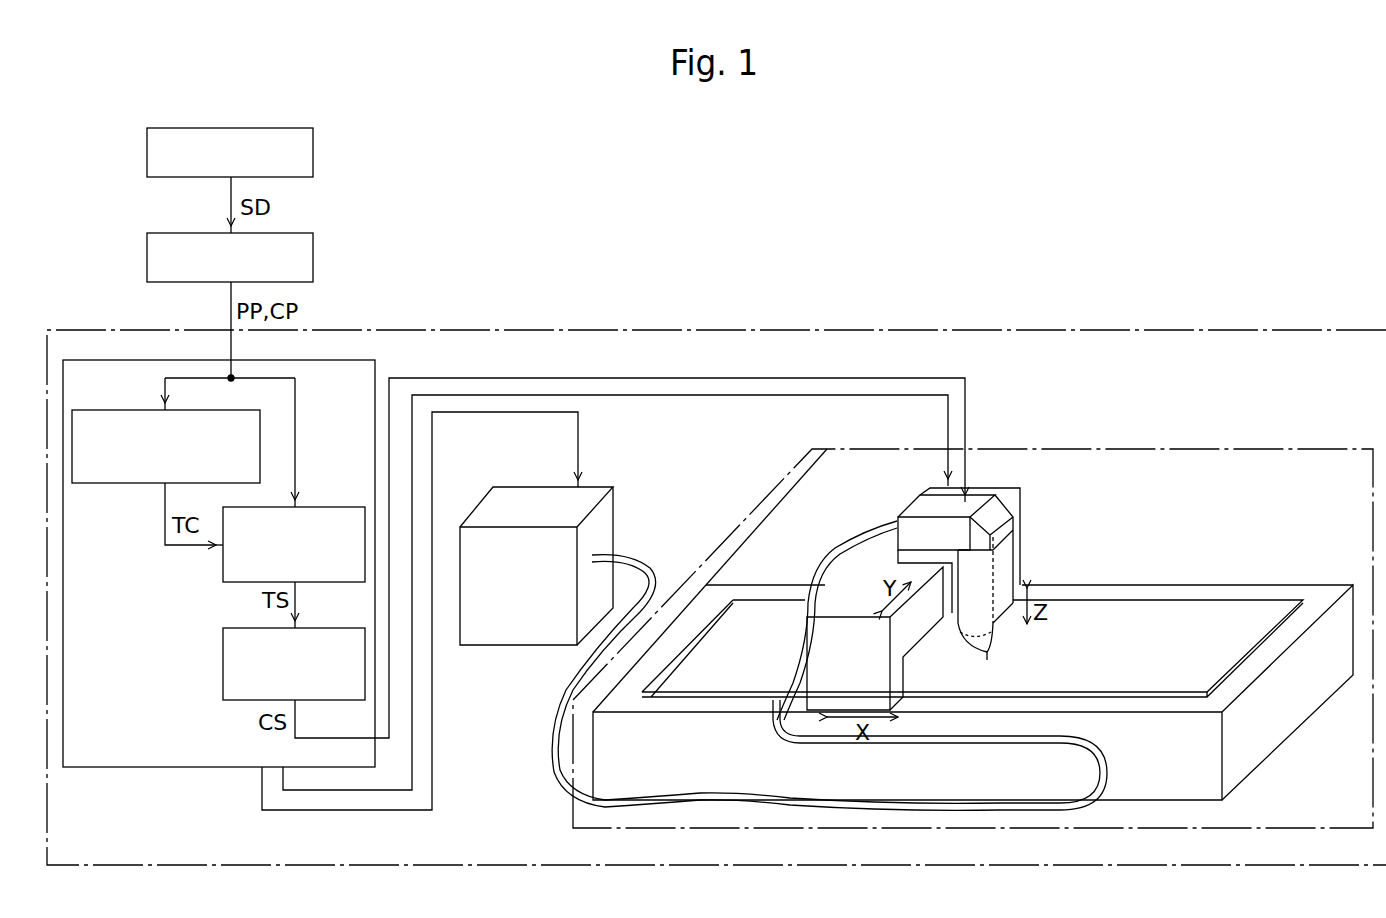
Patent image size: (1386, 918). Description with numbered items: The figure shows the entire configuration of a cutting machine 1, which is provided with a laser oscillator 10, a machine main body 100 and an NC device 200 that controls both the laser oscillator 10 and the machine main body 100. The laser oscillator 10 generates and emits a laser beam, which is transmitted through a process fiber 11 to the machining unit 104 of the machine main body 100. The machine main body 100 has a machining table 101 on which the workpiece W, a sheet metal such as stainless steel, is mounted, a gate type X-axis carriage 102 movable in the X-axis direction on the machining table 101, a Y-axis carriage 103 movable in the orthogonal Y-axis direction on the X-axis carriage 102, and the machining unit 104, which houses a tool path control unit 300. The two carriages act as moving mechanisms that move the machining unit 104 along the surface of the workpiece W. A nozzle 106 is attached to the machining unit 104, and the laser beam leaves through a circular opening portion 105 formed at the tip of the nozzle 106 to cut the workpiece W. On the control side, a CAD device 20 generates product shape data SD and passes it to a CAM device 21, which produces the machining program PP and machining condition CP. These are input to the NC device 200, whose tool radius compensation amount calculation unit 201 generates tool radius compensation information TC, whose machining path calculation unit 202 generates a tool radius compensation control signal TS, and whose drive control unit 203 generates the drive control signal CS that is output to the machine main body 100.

The cutting machine 1 is at (1222, 330).
The laser oscillator 10 is at (548, 495).
The process fiber 11 is at (557, 756).
The CAD device 20 is at (315, 152).
The CAM device 21 is at (315, 258).
The machine main body 100 is at (1214, 449).
The machining table 101 is at (1220, 598).
The X-axis carriage 102 is at (1023, 510).
The Y-axis carriage 103 is at (942, 618).
The machining unit 104 is at (1010, 568).
The opening portion 105 is at (990, 657).
The nozzle 106 is at (1000, 640).
The NC device 200 is at (168, 768).
The tool radius compensation amount calculation unit 201 is at (110, 484).
The machining path calculation unit 202 is at (338, 507).
The drive control unit 203 is at (222, 660).
The tool path control unit 300 is at (900, 510).
The workpiece W is at (1140, 604).